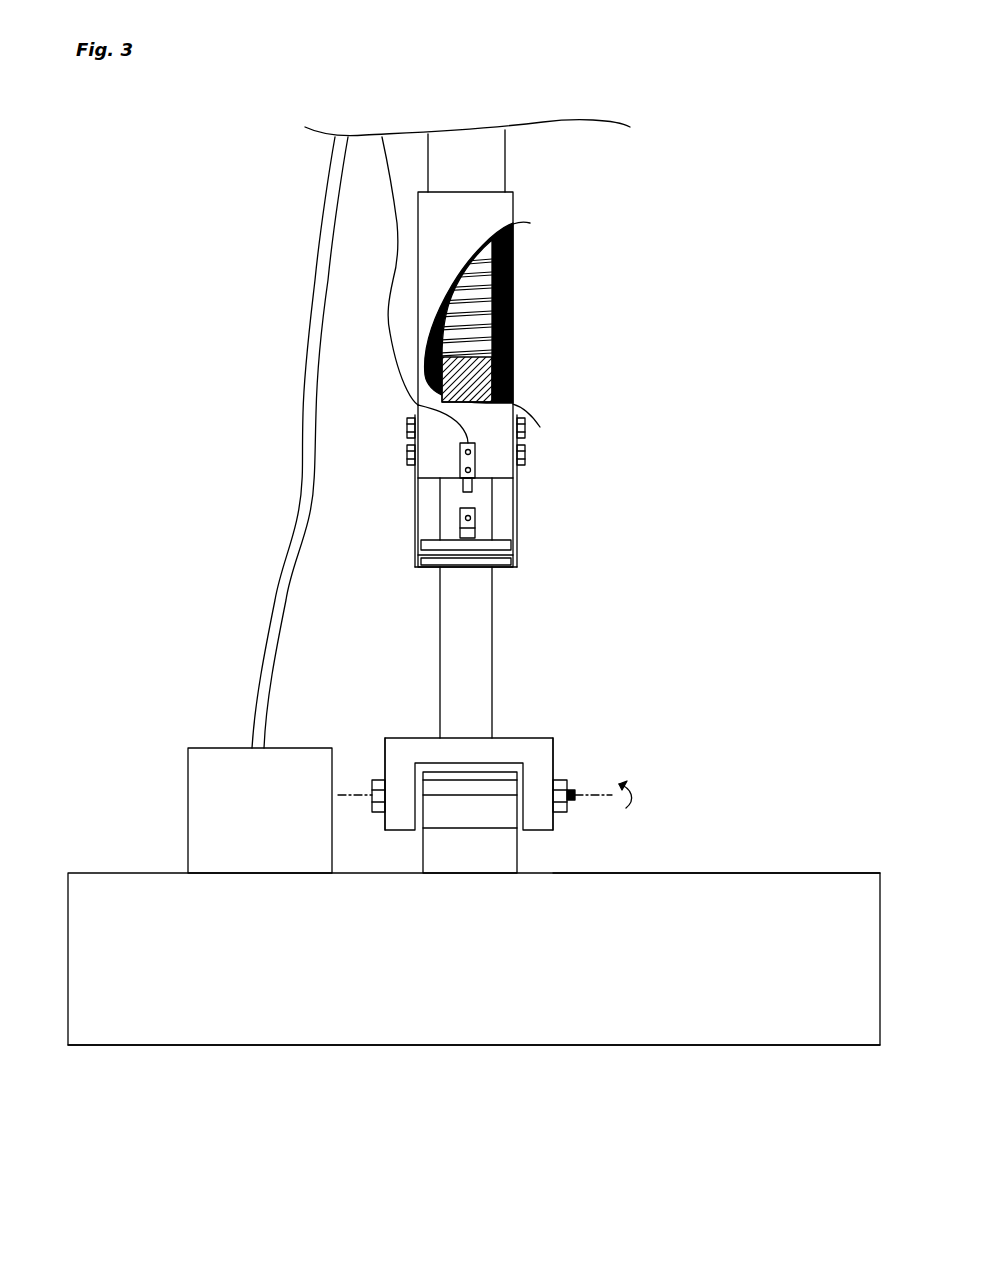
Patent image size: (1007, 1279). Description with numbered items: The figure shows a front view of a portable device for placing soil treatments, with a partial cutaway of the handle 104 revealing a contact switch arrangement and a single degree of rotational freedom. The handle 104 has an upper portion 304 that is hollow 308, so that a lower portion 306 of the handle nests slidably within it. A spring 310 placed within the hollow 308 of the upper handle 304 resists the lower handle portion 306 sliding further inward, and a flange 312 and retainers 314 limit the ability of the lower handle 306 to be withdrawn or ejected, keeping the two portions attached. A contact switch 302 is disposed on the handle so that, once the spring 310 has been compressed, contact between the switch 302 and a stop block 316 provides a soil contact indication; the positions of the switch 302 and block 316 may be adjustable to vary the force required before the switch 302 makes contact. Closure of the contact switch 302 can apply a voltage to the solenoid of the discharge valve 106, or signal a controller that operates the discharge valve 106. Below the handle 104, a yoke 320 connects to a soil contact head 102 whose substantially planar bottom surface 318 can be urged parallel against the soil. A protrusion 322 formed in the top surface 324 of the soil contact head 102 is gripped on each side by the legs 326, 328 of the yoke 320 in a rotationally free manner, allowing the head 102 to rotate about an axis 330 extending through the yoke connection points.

The soil contact head 102 is at (765, 888).
The handle 104 is at (485, 155).
The discharge valve 106 is at (197, 767).
The contact switch 302 is at (468, 462).
The upper portion of the handle 304 is at (497, 207).
The lower portion of the handle 306 is at (483, 642).
The hollow 308 is at (482, 253).
The spring 310 is at (512, 307).
The flange 312 is at (502, 543).
The retainers 314 is at (492, 562).
The stop block 316 is at (462, 522).
The bottom surface 318 is at (632, 1045).
The yoke 320 is at (532, 750).
The protrusion 322 is at (503, 862).
The top surface 324 is at (698, 872).
The leg of the yoke 326 is at (540, 762).
The leg of the yoke 328 is at (397, 753).
The axis 330 is at (590, 793).